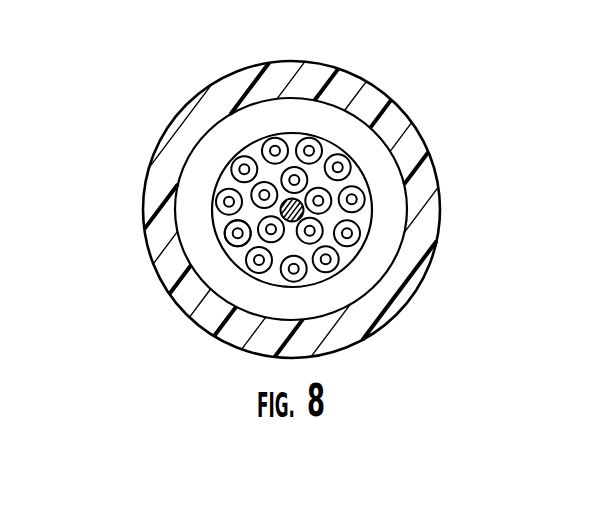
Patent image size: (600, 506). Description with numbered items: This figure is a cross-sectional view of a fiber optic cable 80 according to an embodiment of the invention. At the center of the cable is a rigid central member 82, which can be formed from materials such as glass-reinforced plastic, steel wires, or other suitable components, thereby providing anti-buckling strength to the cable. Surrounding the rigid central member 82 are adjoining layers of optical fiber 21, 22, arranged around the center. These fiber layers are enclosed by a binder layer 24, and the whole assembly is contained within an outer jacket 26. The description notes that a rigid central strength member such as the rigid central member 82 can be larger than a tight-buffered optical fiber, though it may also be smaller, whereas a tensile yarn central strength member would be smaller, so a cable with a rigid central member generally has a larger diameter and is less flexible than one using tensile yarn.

The fiber optic cable 80 is at (121, 73).
The optical fiber 21 is at (285, 199).
The optical fiber 22 is at (232, 236).
The binder layer 24 is at (362, 267).
The jacket 26 is at (370, 108).
The rigid central member 82 is at (294, 200).